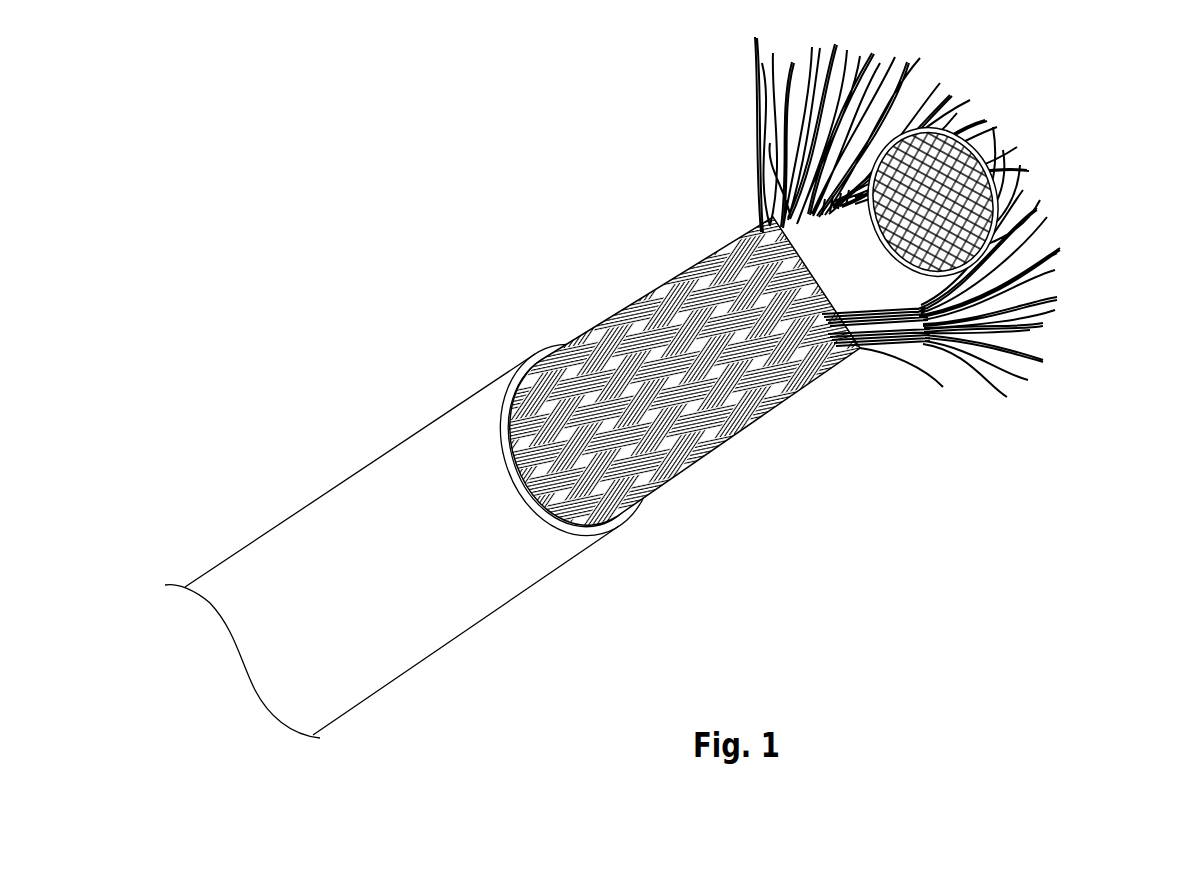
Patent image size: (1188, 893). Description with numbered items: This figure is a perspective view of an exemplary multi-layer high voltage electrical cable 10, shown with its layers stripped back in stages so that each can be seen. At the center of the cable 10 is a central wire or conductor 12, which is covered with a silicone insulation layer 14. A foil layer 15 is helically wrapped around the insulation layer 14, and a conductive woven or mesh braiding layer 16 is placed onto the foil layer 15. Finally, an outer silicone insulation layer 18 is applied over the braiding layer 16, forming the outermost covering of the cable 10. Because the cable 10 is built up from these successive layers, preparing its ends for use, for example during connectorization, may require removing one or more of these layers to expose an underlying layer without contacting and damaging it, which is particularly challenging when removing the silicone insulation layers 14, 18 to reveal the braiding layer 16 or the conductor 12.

The high voltage electrical cable 10 is at (598, 293).
The central wire or conductor 12 is at (953, 214).
The silicone insulation layer 14 is at (997, 217).
The foil layer 15 is at (910, 278).
The conductive woven or mesh braiding layer 16 is at (927, 84).
The outer silicone insulation layer 18 is at (510, 408).